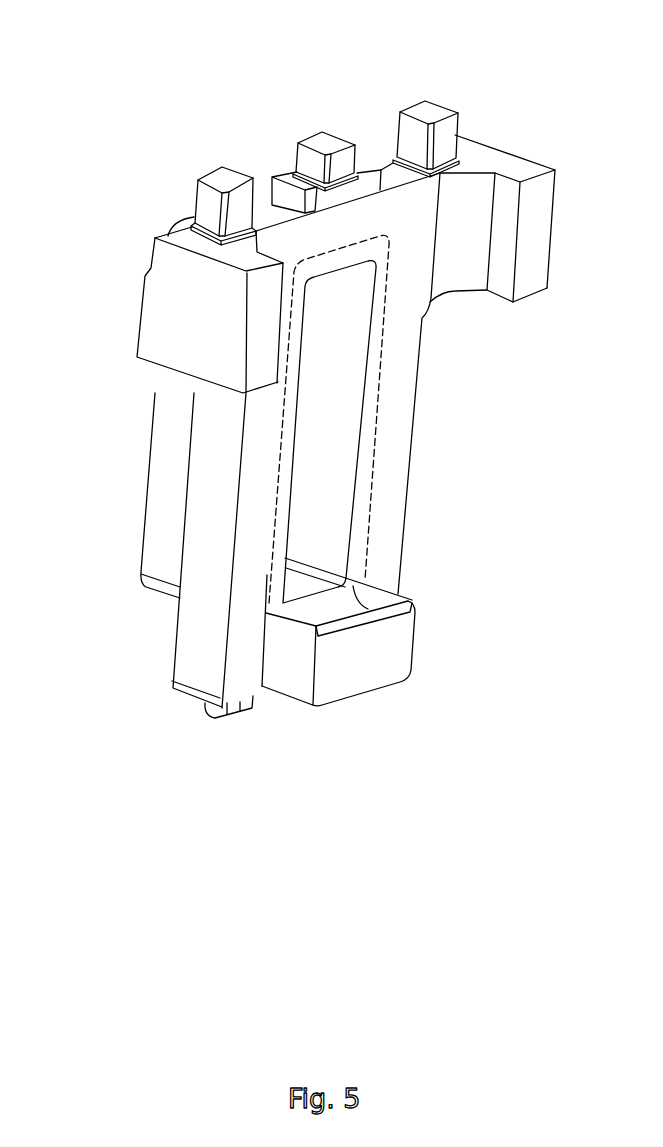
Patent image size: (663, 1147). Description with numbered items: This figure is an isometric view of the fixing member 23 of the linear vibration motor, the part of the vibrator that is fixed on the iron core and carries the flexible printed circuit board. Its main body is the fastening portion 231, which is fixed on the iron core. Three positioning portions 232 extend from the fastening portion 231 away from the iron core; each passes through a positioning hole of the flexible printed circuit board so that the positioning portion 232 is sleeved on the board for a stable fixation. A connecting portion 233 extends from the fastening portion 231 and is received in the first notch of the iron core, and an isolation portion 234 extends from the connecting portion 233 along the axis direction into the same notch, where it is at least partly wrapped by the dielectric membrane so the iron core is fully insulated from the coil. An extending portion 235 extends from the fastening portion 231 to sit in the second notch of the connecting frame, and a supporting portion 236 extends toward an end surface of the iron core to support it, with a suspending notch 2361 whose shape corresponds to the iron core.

The fixing member 23 is at (303, 43).
The fastening portion 231 is at (397, 435).
The positioning portion 232 is at (202, 172).
The connecting portion 233 is at (368, 497).
The isolation portion 234 is at (160, 505).
The extending portion 235 is at (221, 717).
The supporting portion 236 is at (395, 670).
The suspending notch 2361 is at (367, 628).